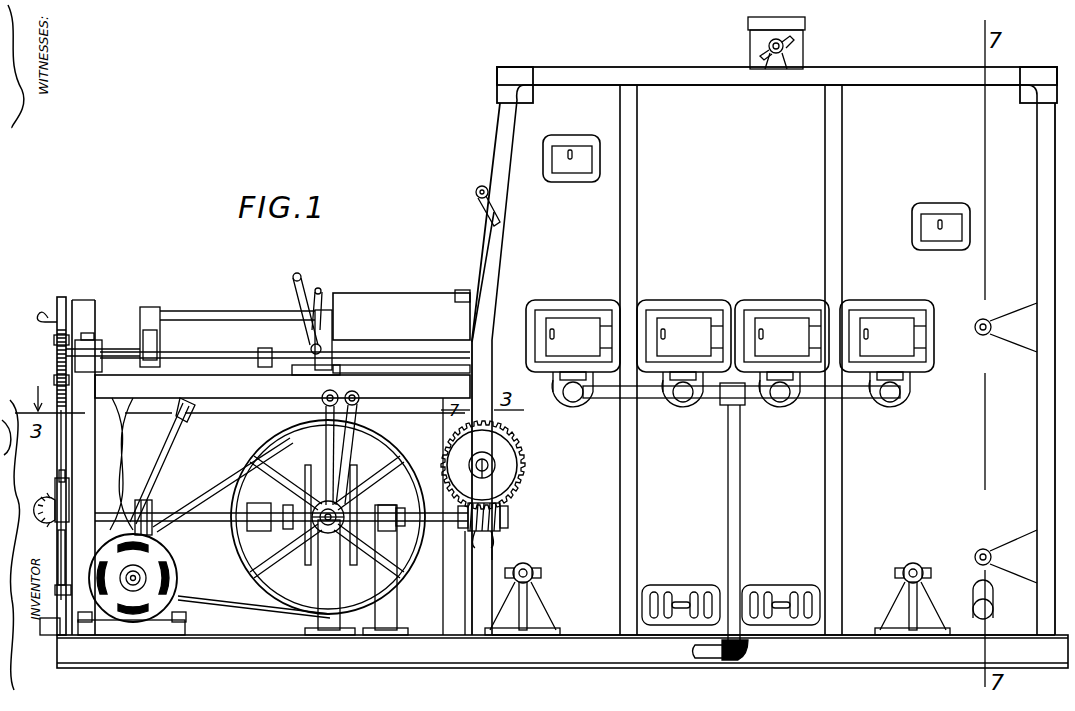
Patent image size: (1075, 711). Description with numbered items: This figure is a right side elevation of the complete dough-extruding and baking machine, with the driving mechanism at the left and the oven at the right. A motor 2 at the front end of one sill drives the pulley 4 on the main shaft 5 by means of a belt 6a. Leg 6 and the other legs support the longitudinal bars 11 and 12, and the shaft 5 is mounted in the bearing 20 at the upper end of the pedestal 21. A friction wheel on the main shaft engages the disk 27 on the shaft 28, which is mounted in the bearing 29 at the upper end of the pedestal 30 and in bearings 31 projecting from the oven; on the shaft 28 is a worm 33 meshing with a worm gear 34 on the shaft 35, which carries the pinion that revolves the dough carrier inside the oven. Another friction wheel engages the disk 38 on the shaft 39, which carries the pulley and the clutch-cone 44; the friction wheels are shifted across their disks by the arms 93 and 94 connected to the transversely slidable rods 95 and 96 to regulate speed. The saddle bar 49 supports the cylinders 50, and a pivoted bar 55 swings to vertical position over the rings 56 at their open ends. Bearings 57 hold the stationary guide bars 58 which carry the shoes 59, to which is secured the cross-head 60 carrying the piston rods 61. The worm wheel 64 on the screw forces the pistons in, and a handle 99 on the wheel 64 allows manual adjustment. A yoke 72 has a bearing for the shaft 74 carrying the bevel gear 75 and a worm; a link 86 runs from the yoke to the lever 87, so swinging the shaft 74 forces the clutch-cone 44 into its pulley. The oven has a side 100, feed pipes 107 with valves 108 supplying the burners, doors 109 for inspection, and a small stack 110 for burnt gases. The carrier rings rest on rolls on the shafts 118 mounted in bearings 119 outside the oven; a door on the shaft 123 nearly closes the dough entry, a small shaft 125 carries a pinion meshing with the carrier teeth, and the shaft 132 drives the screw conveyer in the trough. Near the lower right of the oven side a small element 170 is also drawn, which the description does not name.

The motor 2 is at (132, 584).
The pulley 4 is at (250, 560).
The main shaft 5 is at (316, 526).
The leg 6 is at (83, 467).
The belt 6a is at (205, 497).
The longitudinal bar 11 is at (282, 505).
The longitudinal bar 12 is at (281, 529).
The bearing 20 is at (322, 513).
The pedestal 21 is at (336, 578).
The disk 27 is at (355, 475).
The shaft 28 is at (408, 513).
The bearing 29 is at (387, 510).
The pedestal 30 is at (385, 570).
The bearings 31 is at (479, 583).
The worm 33 is at (505, 518).
The worm gear 34 is at (515, 468).
The shaft 35 is at (482, 472).
The disk 38 is at (306, 507).
The shaft 39 is at (248, 514).
The clutch-cone 44 is at (141, 505).
The saddle bar 49 is at (333, 338).
The cylinders 50 is at (401, 315).
The pivoted bar 55 is at (293, 284).
The rings 56 is at (320, 292).
The bearings 57 is at (88, 340).
The guide bars 58 is at (285, 366).
The shoes 59 is at (203, 352).
The cross-head 60 is at (150, 320).
The piston rods 61 is at (213, 315).
The worm wheel 64 is at (62, 326).
The yoke 72 is at (62, 497).
The shaft 74 is at (62, 440).
The bevel gear 75 is at (42, 500).
The link 86 is at (63, 552).
The lever 87 is at (68, 590).
The arm 93 is at (350, 444).
The arm 94 is at (319, 393).
The transversely slidable rod 95 is at (358, 393).
The transversely slidable rod 96 is at (326, 436).
The handle 99 is at (42, 313).
The side 100 is at (764, 351).
The feed pipes 107 is at (728, 432).
The valves 108 is at (573, 395).
The doors 109 is at (573, 168).
The stack 110 is at (796, 48).
The shafts 118 is at (525, 570).
The bearings 119 is at (535, 604).
The shaft 123 is at (484, 255).
The small shaft 125 is at (983, 334).
The shaft 132 is at (981, 550).
The cylinder 170 is at (992, 605).